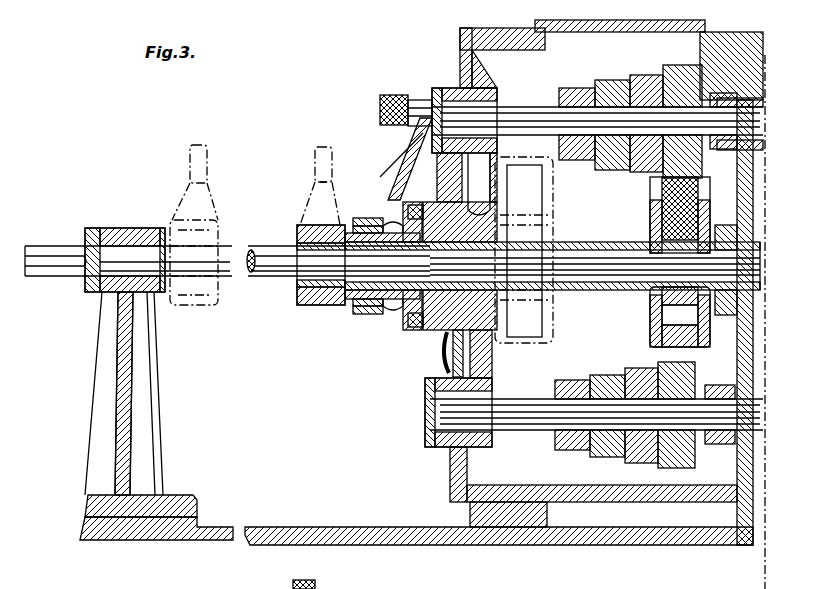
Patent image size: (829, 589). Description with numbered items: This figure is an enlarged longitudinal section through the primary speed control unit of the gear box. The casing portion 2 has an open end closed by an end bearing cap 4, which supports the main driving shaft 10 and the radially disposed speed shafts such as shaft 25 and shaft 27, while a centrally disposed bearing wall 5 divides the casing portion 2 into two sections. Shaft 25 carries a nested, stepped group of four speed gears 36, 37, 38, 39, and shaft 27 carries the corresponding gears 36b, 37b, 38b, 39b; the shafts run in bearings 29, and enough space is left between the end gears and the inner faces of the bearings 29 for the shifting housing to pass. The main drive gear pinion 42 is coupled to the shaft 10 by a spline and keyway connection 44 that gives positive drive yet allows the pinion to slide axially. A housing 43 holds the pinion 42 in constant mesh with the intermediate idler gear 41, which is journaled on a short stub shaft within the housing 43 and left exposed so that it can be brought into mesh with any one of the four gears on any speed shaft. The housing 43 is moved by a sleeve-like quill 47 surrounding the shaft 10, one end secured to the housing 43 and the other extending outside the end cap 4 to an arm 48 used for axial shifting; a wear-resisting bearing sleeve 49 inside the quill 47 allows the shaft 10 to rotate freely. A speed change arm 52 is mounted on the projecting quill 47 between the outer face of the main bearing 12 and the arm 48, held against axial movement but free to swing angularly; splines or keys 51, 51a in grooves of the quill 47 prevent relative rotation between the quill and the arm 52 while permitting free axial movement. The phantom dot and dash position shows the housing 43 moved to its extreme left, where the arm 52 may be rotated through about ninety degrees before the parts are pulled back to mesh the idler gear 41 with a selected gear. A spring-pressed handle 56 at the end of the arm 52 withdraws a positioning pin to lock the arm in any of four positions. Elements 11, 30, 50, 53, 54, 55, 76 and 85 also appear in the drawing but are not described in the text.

The casing portion 2 is at (485, 48).
The end bearing cap 4 is at (462, 70).
The bearing wall 5 is at (750, 72).
The main shaft 10 is at (62, 252).
The pedestal 11 is at (127, 400).
The main bearing 12 is at (422, 330).
The speed shaft 25 is at (512, 110).
The speed shaft 27 is at (502, 407).
The bearings 29 is at (432, 90).
The bearing 30 is at (725, 90).
The speed gear 36 is at (568, 90).
The speed gear 37 is at (600, 82).
The speed gear 38 is at (633, 78).
The speed gear 39 is at (673, 65).
The speed gear 36b is at (570, 447).
The speed gear 37b is at (610, 457).
The speed gear 38b is at (643, 463).
The speed gear 39b is at (680, 468).
The intermediate idler gear 41 is at (653, 198).
The main drive gear pinion 42 is at (662, 320).
The housing 43 is at (655, 232).
The spline and keyway connection 44 is at (572, 266).
The sleeve-like quill 47 is at (298, 287).
The arm 48 is at (318, 196).
The bearing sleeve 49 is at (365, 307).
The gear 50 is at (560, 242).
The spline or key 51 is at (355, 240).
The spline or key 51a is at (357, 308).
The speed change arm 52 is at (410, 150).
The clutch member 53 is at (378, 222).
The clutch member 54 is at (410, 330).
The clutch member 55 is at (415, 362).
The spring-pressed handle 56 is at (378, 108).
The base 76 is at (217, 581).
The top plate 85 is at (535, 25).